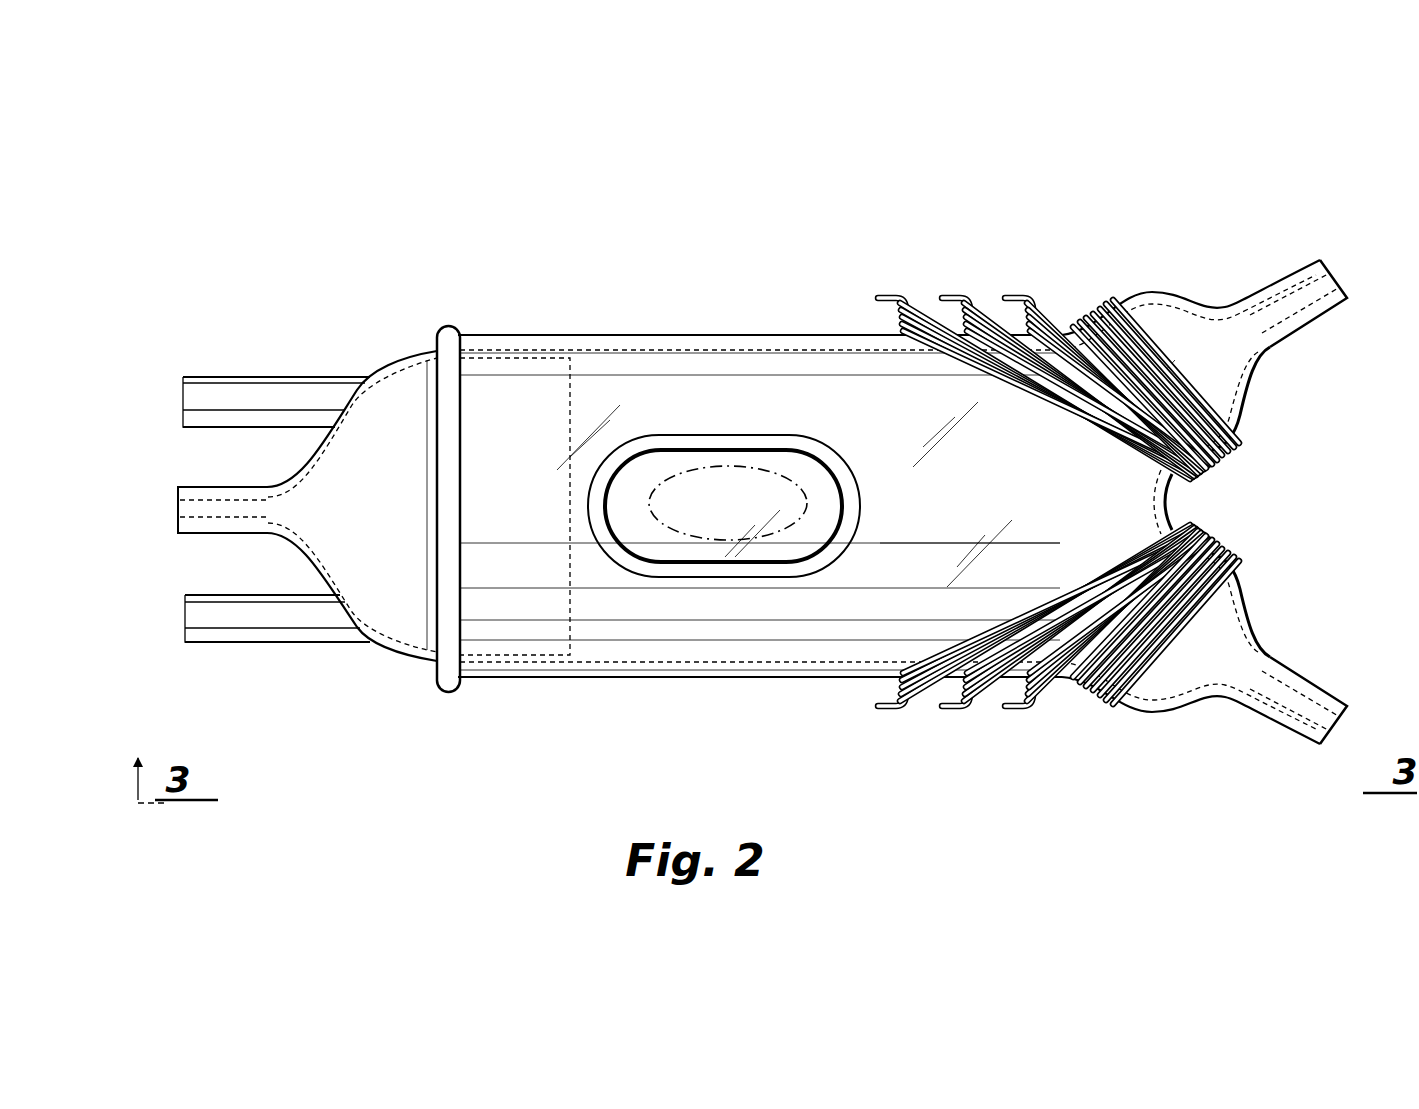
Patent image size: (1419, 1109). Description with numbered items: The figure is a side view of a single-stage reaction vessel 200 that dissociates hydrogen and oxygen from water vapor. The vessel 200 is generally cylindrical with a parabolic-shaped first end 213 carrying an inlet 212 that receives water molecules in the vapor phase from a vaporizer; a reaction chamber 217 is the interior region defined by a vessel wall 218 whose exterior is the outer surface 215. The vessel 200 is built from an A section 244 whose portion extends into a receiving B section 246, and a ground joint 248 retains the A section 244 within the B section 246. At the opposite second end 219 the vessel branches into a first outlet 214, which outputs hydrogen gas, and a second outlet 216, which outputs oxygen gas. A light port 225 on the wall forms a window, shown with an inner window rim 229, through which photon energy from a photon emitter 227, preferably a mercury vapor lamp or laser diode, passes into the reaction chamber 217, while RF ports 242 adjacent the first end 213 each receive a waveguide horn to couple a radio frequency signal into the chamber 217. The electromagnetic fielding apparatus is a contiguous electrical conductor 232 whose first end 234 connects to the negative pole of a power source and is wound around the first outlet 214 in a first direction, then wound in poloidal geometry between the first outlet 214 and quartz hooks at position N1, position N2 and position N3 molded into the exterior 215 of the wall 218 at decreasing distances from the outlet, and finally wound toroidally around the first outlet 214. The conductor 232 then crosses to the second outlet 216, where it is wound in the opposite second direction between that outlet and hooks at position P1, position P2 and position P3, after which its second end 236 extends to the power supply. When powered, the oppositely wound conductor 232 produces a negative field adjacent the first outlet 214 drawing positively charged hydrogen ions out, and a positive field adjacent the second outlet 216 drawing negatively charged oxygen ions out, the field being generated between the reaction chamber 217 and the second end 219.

The reaction vessel 200 is at (843, 253).
The inlet 212 is at (230, 486).
The first end 213 is at (438, 505).
The first outlet 214 is at (1283, 278).
The outer surface 215 is at (613, 334).
The second outlet 216 is at (1270, 710).
The reaction chamber 217 is at (930, 527).
The vessel wall 218 is at (728, 335).
The second end 219 is at (1250, 433).
The light port 225 is at (630, 500).
The photon emitter 227 is at (773, 473).
The window rim 229 is at (707, 440).
The contiguous electrical conductor 232 is at (1200, 481).
The first end of the contiguous electrical conductor 234 is at (1093, 312).
The second end of the contiguous electrical conductor 236 is at (1097, 698).
The RF ports 242 is at (218, 390).
The A section 244 is at (382, 358).
The B section 246 is at (480, 333).
The ground joint 248 is at (427, 350).
The position N1 is at (892, 292).
The position N2 is at (955, 292).
The position N3 is at (1018, 292).
The position P1 is at (890, 713).
The position P2 is at (957, 713).
The position P3 is at (1022, 713).